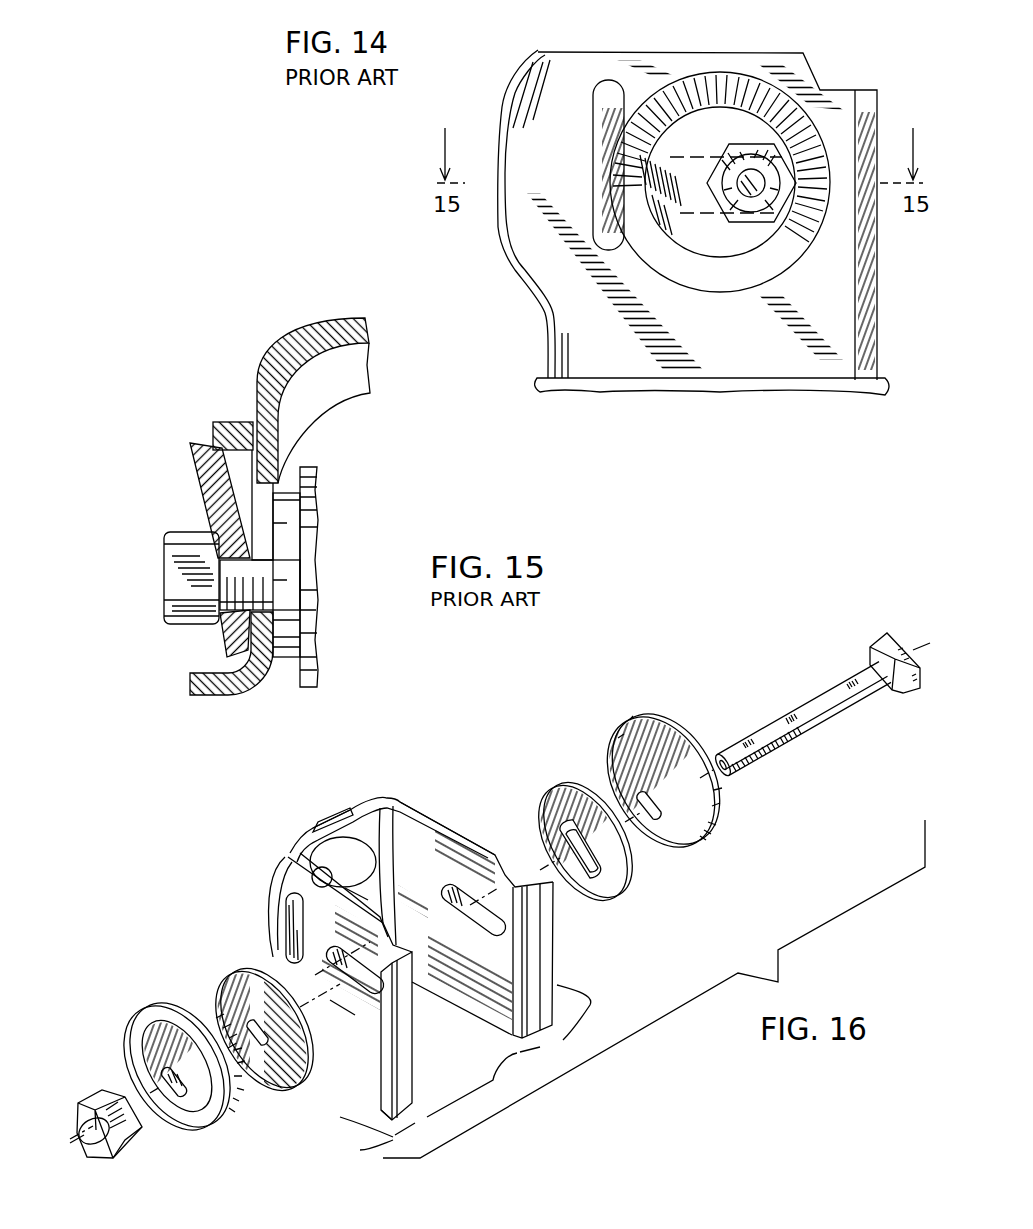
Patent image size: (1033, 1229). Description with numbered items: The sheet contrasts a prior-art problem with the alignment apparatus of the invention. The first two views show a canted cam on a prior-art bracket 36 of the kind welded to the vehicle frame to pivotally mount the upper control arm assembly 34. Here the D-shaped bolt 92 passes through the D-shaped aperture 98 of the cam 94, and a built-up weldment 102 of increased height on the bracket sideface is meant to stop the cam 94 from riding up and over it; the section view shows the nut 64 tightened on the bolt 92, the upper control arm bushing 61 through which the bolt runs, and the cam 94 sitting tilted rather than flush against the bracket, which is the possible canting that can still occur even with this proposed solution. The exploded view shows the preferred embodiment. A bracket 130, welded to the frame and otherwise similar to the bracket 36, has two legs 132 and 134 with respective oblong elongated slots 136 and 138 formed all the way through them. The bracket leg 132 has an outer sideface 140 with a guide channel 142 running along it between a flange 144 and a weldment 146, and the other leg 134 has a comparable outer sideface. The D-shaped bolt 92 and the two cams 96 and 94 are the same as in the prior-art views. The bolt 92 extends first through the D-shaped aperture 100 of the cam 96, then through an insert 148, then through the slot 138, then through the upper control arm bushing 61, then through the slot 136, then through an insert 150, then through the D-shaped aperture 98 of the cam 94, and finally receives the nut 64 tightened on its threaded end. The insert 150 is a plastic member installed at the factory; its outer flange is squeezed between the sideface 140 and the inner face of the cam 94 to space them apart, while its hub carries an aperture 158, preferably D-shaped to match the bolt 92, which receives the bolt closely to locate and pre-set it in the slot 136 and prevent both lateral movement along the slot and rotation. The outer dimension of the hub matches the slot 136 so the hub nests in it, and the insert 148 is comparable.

In FIG. 15, the upper control arm assembly 34 is at (310, 637).
In FIG. 14, the U-shaped bracket 36 is at (522, 67).
In FIG. 15, the U-shaped bracket 36 is at (342, 320).
In FIG. 15, the upper control arm bushing 61 is at (287, 658).
In FIG. 14, the nut 64 is at (729, 213).
In FIG. 15, the nut 64 is at (193, 624).
In FIG. 16, the nut 64 is at (110, 1090).
In FIG. 14, the D-shaped bolt 92 is at (764, 166).
In FIG. 15, the D-shaped bolt 92 is at (270, 568).
In FIG. 16, the D-shaped bolt 92 is at (847, 713).
In FIG. 14, the cam 94 is at (737, 82).
In FIG. 15, the cam 94 is at (190, 448).
In FIG. 16, the cam 94 is at (147, 1005).
In FIG. 16, the cam 96 is at (665, 690).
In FIG. 16, the D-shaped aperture 98 is at (176, 1096).
In FIG. 16, the D-shaped aperture 100 is at (650, 822).
In FIG. 14, the weldment 102 is at (595, 107).
In FIG. 15, the weldment 102 is at (204, 430).
In FIG. 16, the bracket 130 is at (303, 840).
In FIG. 16, the bracket leg 132 is at (290, 868).
In FIG. 16, the bracket leg 134 is at (433, 813).
In FIG. 16, the elongated slot 136 is at (412, 1033).
In FIG. 16, the elongated slot 138 is at (475, 935).
In FIG. 16, the outer sideface 140 is at (300, 900).
In FIG. 16, the guide channel 142 is at (341, 1059).
In FIG. 16, the flange 144 is at (385, 1125).
In FIG. 16, the weldment 146 is at (286, 917).
In FIG. 16, the insert 148 is at (575, 790).
In FIG. 16, the insert 150 is at (229, 985).
In FIG. 16, the aperture 158 is at (262, 1048).